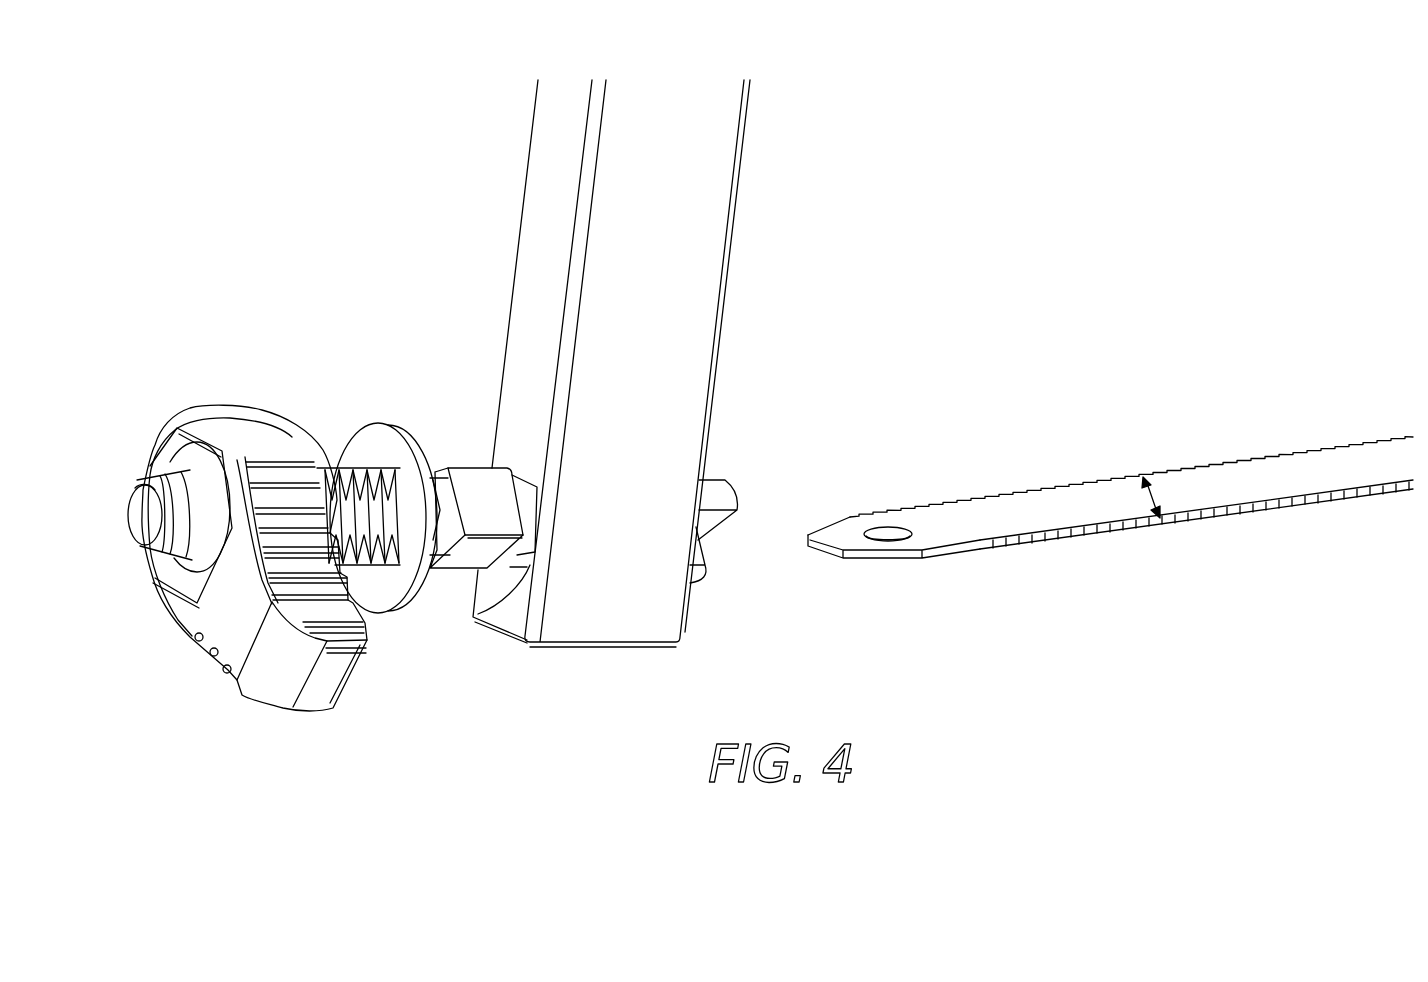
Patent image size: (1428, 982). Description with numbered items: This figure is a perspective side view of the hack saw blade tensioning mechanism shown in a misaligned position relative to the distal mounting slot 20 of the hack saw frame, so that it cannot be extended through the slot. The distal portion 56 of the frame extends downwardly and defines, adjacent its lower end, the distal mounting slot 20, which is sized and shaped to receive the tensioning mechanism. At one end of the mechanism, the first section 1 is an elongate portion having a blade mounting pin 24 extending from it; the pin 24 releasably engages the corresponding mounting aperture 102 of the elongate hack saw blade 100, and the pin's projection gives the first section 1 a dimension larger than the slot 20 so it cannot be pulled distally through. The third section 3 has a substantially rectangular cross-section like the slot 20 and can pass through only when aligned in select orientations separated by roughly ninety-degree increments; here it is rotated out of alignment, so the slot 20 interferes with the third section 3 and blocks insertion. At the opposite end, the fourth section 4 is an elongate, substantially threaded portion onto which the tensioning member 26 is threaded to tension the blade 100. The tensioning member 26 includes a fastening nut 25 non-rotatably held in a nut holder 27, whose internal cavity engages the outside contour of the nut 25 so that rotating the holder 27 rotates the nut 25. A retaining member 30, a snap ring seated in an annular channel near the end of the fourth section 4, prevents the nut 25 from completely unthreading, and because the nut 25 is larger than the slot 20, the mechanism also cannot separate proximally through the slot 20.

The first section 1 is at (722, 486).
The third section 3 is at (465, 475).
The fourth section 4 is at (133, 540).
The distal mounting slot 20 is at (478, 614).
The blade mounting pin 24 is at (708, 553).
The fastening nut 25 is at (177, 577).
The tensioning member 26 is at (183, 633).
The nut holder 27 is at (257, 683).
The retaining member 30 is at (177, 480).
The distal portion 56 is at (727, 263).
The hack saw blade 100 is at (1298, 453).
The mounting aperture 102 is at (888, 534).